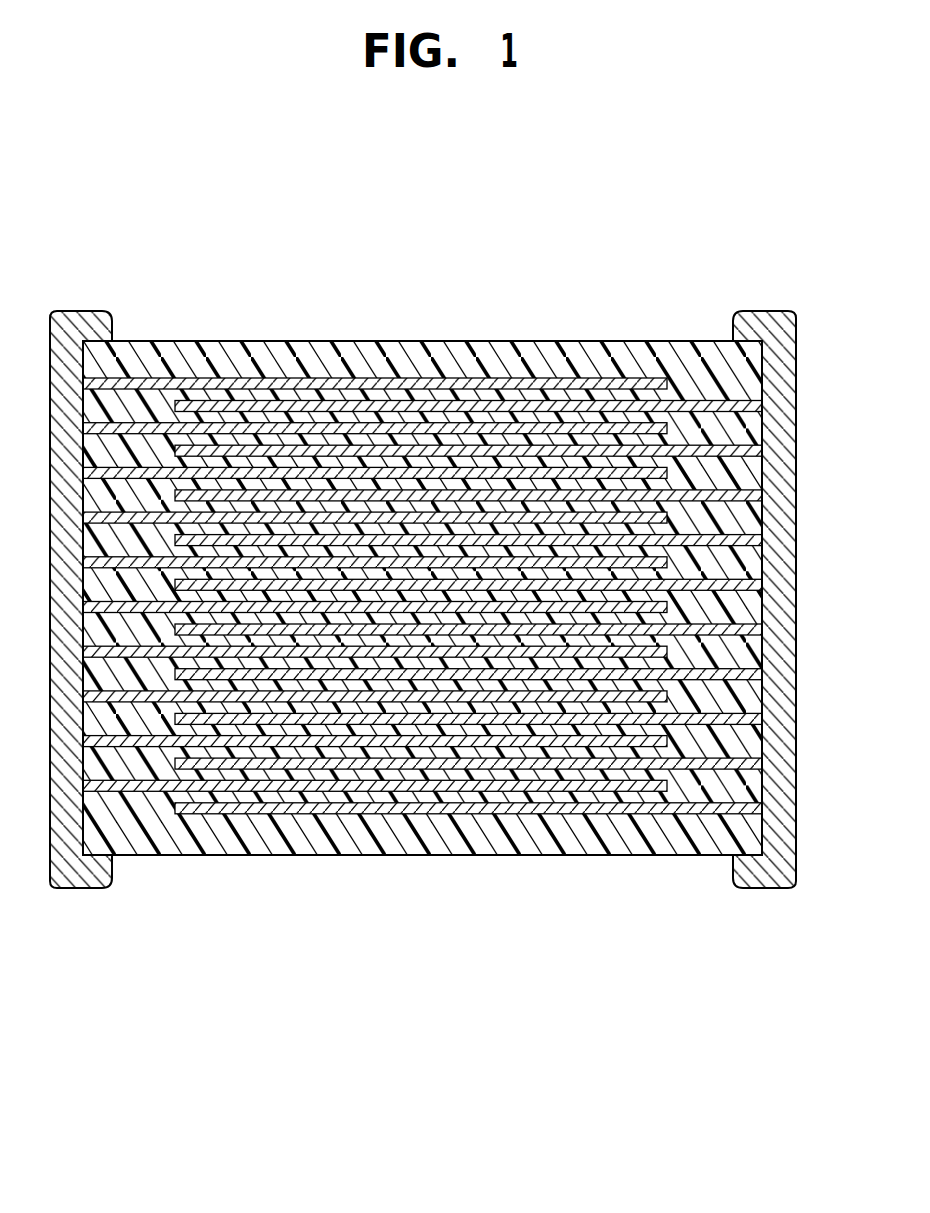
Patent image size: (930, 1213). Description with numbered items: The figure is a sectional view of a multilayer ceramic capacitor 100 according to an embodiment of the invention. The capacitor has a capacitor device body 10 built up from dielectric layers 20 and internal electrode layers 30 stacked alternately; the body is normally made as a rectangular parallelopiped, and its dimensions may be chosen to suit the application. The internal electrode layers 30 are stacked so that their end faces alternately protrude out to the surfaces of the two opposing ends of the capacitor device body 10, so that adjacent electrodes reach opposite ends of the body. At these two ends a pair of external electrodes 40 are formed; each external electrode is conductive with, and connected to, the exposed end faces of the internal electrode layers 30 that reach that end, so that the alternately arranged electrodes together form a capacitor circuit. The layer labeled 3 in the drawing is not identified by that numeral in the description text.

The multilayer ceramic capacitor 100 is at (422, 628).
The capacitor device body 10 is at (613, 853).
The dielectric layers 20 is at (296, 388).
The internal electrode layers 30 is at (482, 388).
The cover layer 3 is at (432, 818).
The external electrodes 40 is at (762, 322).